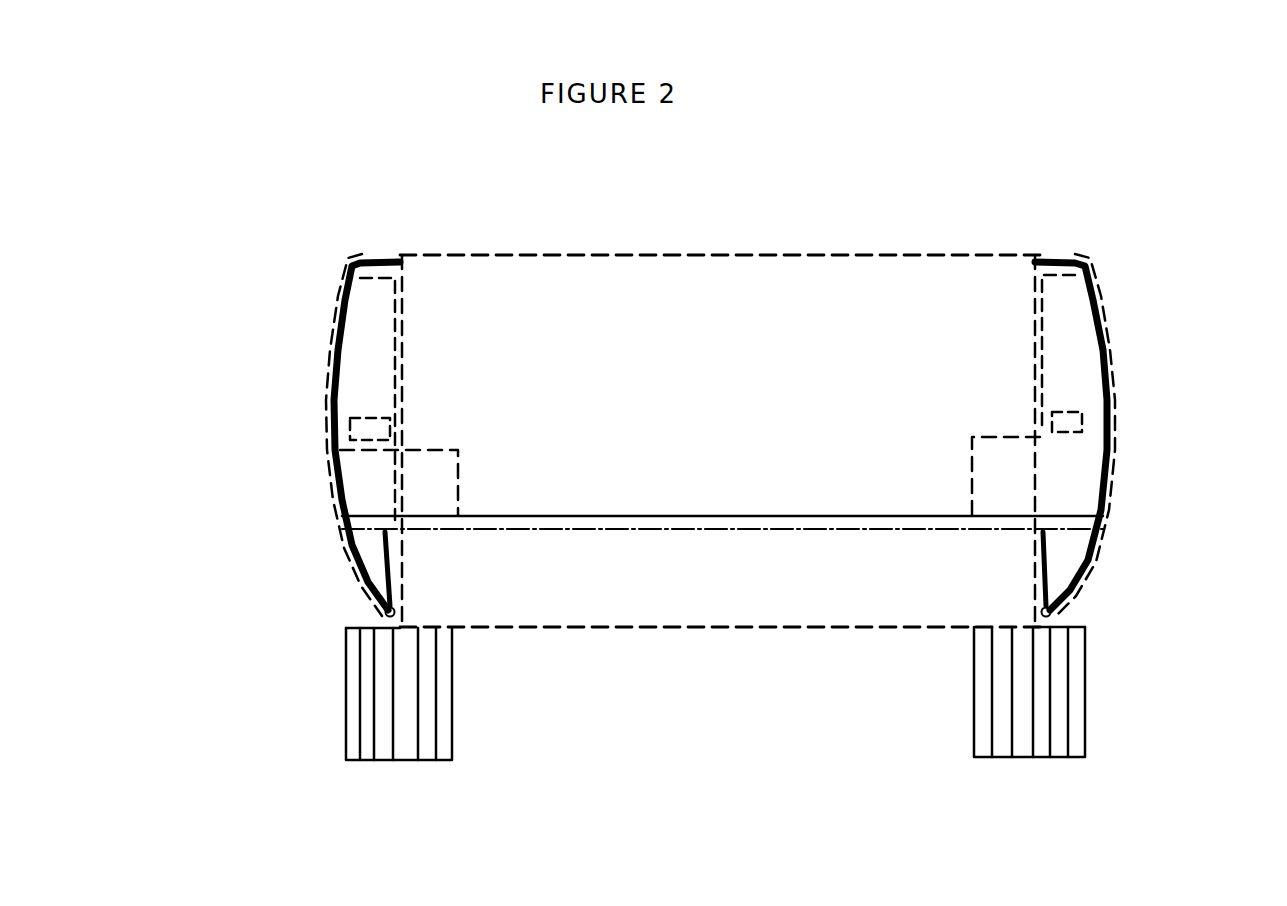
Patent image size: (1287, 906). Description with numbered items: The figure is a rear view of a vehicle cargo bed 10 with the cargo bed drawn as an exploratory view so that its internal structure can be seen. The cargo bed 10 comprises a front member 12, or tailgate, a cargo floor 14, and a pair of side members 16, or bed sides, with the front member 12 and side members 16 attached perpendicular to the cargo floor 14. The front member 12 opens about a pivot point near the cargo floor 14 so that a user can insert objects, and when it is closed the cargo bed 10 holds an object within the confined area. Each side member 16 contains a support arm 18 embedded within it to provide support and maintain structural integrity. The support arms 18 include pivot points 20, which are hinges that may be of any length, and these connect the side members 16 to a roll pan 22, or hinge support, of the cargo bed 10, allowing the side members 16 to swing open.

The cargo bed 10 is at (480, 142).
The front member 12 is at (903, 290).
The cargo floor 14 is at (815, 518).
The side members 16 is at (330, 462).
The support arms 18 is at (733, 411).
The pivot points 20 is at (386, 613).
The roll pan 22 is at (545, 587).